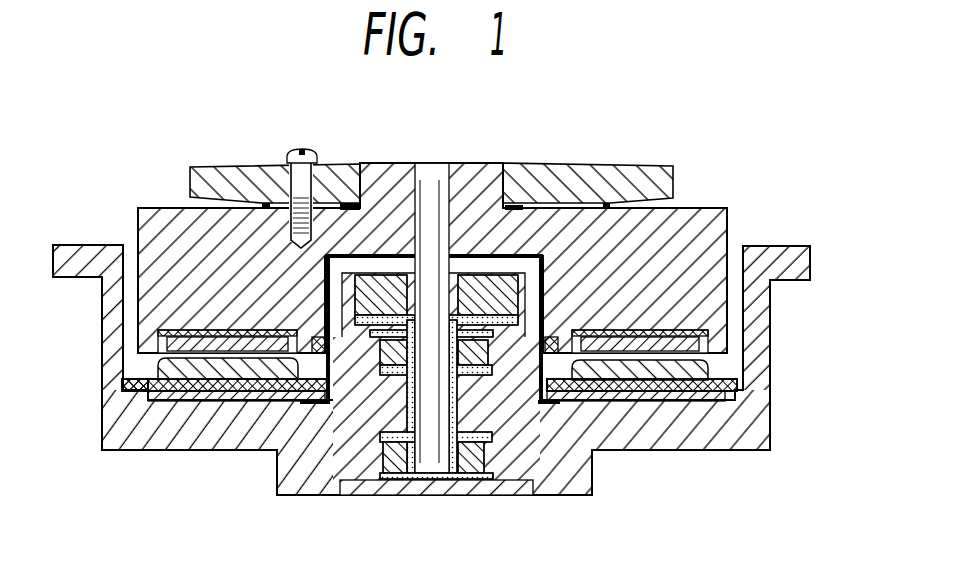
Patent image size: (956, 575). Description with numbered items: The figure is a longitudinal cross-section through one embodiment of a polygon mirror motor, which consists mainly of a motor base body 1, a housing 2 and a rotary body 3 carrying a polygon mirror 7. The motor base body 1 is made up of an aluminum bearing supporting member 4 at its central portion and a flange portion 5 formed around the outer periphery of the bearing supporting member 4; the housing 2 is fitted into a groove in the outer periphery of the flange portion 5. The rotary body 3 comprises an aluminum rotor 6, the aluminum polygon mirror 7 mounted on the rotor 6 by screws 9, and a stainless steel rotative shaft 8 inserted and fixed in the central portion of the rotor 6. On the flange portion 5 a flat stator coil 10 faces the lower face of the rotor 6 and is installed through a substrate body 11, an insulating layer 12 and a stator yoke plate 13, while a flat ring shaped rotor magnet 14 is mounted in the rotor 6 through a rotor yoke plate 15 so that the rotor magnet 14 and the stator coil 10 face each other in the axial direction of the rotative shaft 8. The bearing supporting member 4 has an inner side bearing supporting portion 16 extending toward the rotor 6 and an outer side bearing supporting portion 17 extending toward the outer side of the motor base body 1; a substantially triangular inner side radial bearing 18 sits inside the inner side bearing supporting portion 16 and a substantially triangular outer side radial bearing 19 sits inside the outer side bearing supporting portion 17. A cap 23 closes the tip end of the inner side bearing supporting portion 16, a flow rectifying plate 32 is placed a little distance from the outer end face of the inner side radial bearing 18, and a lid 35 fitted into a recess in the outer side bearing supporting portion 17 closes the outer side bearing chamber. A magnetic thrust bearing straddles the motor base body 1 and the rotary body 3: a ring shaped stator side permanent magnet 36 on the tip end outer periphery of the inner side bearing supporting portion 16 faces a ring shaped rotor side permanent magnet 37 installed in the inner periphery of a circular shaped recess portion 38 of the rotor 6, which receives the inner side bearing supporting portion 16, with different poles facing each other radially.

The motor base body 1 is at (611, 460).
The housing 2 is at (770, 350).
The rotary body 3 is at (712, 196).
The bearing supporting member 4 is at (560, 470).
The flange portion 5 is at (713, 455).
The rotor 6 is at (721, 227).
The polygon mirror 7 is at (623, 173).
The rotative shaft 8 is at (430, 176).
The screws 9 is at (297, 152).
The stator coil 10 is at (710, 363).
The substrate body 11 is at (139, 378).
The insulating layer 12 is at (183, 390).
The stator yoke plate 13 is at (225, 390).
The rotor magnet 14 is at (640, 345).
The rotor yoke plate 15 is at (688, 327).
The inner side bearing supporting portion 16 is at (336, 366).
The outer side bearing supporting portion 17 is at (285, 495).
The inner side radial bearing 18 is at (493, 350).
The outer side radial bearing 19 is at (470, 495).
The cap 23 is at (530, 282).
The flow rectifying plate 32 is at (485, 297).
The lid 35 is at (353, 495).
The stator side permanent magnet 36 is at (320, 330).
The rotor side permanent magnet 37 is at (318, 308).
The circular shaped recess portion 38 is at (362, 265).